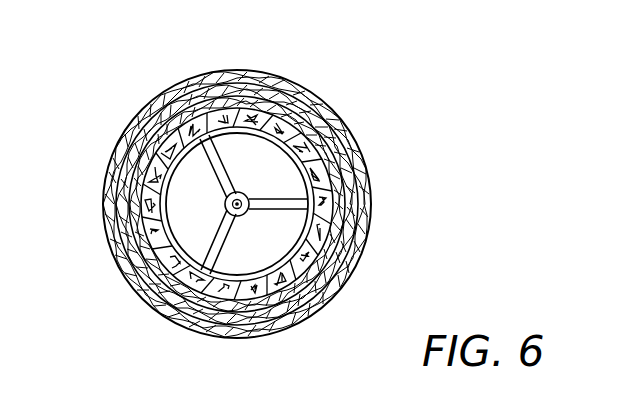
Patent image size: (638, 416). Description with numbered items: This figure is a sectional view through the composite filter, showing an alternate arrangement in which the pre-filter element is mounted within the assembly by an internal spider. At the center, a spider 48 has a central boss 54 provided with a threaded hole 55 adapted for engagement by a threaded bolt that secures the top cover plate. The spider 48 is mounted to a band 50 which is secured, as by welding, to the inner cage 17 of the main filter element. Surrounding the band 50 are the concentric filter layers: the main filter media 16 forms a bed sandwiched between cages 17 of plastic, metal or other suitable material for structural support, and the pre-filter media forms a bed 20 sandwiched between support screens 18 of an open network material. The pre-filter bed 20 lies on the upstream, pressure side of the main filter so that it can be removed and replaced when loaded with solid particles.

The pre-filter bed 20 is at (262, 72).
The support screens 18 is at (352, 237).
The cages 17 is at (153, 272).
The main filter media 16 is at (137, 217).
The band 50 is at (306, 183).
The spider 48 is at (213, 160).
The central boss 54 is at (226, 203).
The threaded hole 55 is at (248, 214).